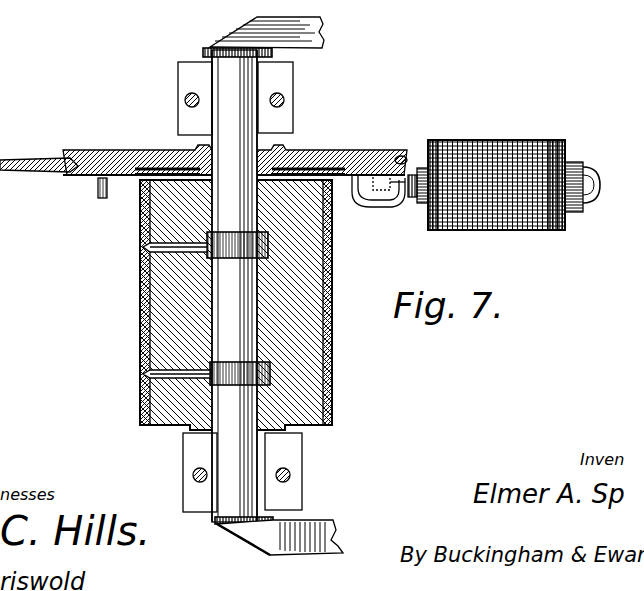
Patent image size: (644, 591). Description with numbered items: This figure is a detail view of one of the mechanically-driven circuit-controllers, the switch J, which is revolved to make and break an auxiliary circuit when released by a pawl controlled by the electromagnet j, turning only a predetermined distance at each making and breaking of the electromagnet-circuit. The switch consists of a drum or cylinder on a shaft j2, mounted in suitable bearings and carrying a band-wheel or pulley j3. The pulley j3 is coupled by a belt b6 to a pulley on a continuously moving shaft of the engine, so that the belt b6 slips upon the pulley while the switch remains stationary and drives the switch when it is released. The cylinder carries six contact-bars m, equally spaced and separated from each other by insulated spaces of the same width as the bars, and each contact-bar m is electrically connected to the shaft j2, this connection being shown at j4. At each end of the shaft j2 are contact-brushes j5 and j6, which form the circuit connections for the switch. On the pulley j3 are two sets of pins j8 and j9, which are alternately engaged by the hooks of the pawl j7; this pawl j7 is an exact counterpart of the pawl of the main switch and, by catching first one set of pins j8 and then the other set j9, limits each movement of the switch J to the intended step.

The electromagnet j is at (514, 171).
The shaft j2 is at (222, 276).
The band-wheel or pulley j3 is at (363, 150).
The connection of contact-bar to shaft j4 is at (143, 247).
The contact-brush j5 is at (326, 25).
The contact-brush j6 is at (280, 537).
The pawl j7 is at (413, 173).
The pins j8 is at (393, 197).
The pins j9 is at (358, 200).
The switch J is at (266, 287).
The contact-bars m is at (140, 306).
The belt b6 is at (39, 151).